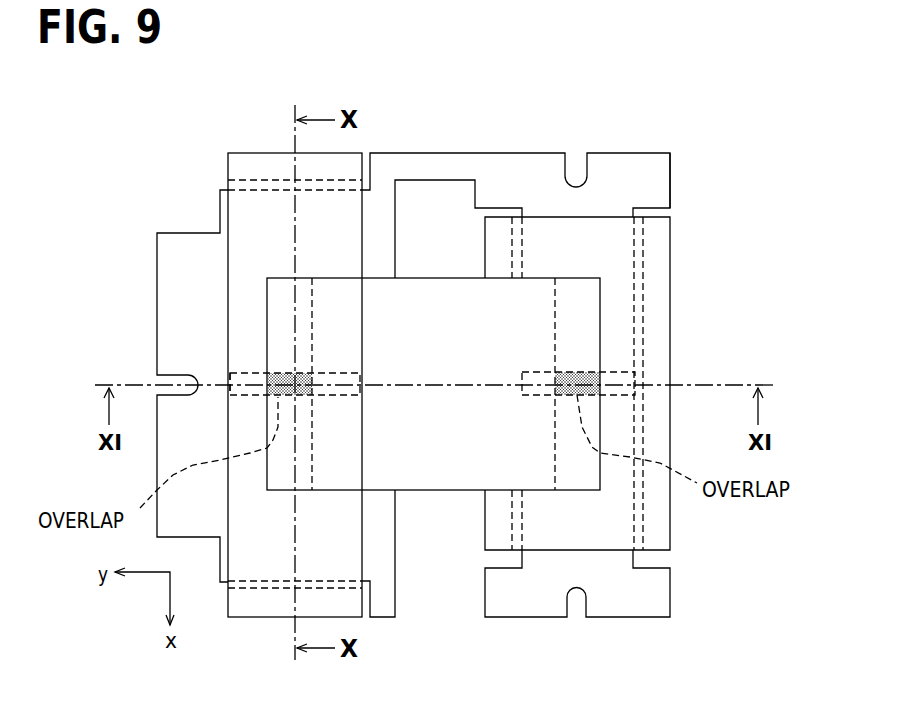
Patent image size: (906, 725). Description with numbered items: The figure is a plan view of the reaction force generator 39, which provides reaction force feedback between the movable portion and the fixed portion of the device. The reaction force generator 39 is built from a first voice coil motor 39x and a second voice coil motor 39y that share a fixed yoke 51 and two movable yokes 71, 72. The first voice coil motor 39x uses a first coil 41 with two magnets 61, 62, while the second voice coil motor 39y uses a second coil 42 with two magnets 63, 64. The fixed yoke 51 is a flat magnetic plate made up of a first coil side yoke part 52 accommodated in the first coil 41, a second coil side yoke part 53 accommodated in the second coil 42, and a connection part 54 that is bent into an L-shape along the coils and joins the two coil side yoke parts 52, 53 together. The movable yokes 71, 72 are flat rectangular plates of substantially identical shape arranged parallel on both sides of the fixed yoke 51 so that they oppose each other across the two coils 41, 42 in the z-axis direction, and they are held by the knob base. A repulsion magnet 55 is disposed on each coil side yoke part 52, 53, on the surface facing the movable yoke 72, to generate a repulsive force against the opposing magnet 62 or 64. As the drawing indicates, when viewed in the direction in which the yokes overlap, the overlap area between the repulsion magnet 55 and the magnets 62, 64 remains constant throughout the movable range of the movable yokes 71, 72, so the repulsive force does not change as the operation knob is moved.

The reaction force generator 39 is at (516, 340).
The first voice coil motor 39x is at (680, 162).
The second voice coil motor 39y is at (212, 166).
The first coil 41 is at (672, 238).
The second coil 42 is at (244, 152).
The fixed yoke 51 is at (516, 362).
The first coil side yoke part 52 is at (618, 383).
The second coil side yoke part 53 is at (182, 314).
The connection part 54 is at (447, 160).
The repulsion magnet 55 is at (412, 356).
The magnet 61 is at (657, 384).
The magnet 62 is at (657, 384).
The magnet 63 is at (187, 381).
The magnet 64 is at (187, 381).
The movable yoke 71 is at (433, 355).
The movable yoke 72 is at (438, 277).